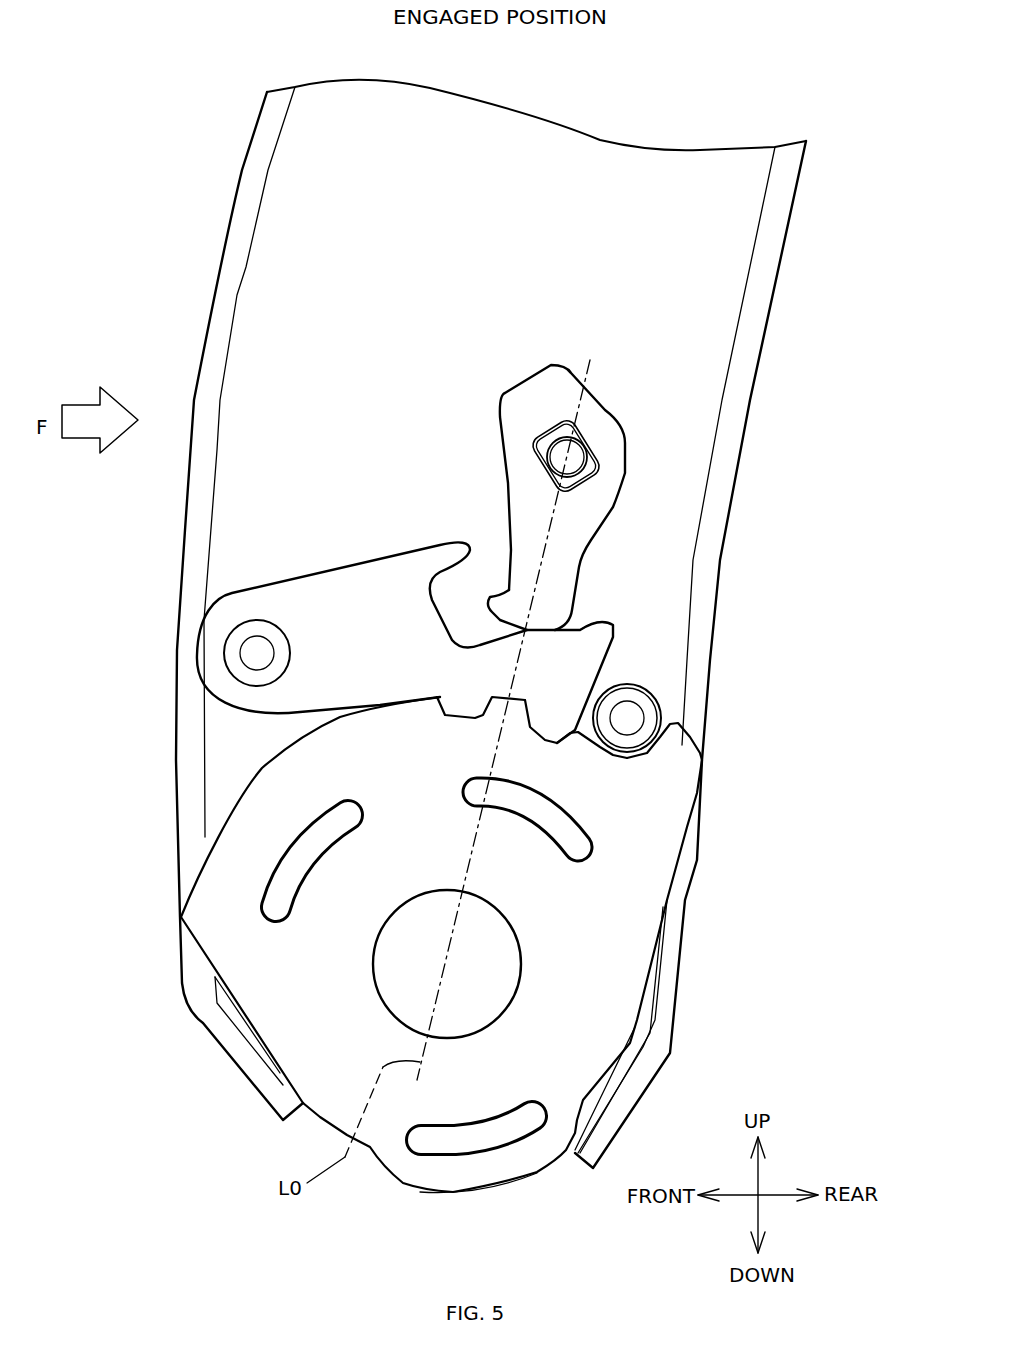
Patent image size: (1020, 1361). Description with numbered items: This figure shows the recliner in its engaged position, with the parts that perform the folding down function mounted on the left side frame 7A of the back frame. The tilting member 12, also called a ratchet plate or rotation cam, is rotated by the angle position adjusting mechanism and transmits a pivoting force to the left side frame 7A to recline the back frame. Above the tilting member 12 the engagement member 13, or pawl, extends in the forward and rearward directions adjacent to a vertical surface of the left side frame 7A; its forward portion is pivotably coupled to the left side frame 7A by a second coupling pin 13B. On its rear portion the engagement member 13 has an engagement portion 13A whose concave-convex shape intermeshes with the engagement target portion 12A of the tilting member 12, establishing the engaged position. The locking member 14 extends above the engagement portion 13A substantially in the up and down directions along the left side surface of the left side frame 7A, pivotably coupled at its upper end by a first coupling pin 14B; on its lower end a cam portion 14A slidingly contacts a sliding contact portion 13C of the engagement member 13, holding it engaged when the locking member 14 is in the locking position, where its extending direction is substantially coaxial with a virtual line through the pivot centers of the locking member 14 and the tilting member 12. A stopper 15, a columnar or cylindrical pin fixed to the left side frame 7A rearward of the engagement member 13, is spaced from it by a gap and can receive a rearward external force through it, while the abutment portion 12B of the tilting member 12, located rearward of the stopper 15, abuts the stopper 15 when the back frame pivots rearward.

The left side frame 7A is at (763, 318).
The tilting member 12 is at (460, 945).
The engagement target portion 12A is at (545, 747).
The abutment portion 12B is at (703, 757).
The engagement member 13 is at (442, 631).
The engagement portion 13A is at (537, 697).
The second coupling pin 13B is at (232, 655).
The sliding contact portion 13C is at (617, 632).
The locking member 14 is at (654, 499).
The cam portion 14A is at (547, 633).
The first coupling pin 14B is at (585, 436).
The stopper 15 is at (661, 705).